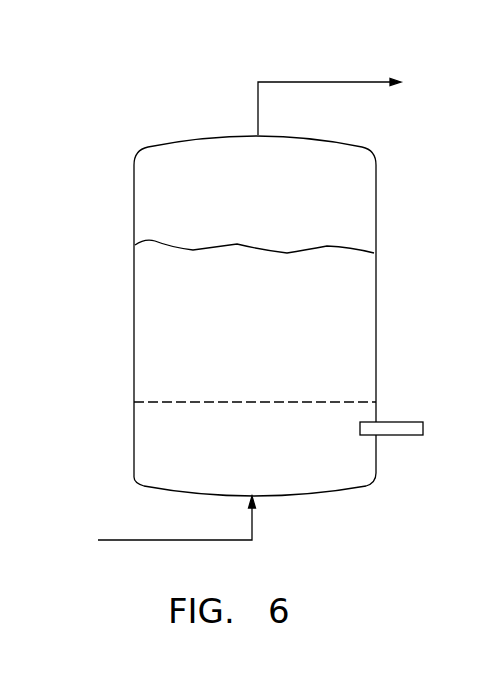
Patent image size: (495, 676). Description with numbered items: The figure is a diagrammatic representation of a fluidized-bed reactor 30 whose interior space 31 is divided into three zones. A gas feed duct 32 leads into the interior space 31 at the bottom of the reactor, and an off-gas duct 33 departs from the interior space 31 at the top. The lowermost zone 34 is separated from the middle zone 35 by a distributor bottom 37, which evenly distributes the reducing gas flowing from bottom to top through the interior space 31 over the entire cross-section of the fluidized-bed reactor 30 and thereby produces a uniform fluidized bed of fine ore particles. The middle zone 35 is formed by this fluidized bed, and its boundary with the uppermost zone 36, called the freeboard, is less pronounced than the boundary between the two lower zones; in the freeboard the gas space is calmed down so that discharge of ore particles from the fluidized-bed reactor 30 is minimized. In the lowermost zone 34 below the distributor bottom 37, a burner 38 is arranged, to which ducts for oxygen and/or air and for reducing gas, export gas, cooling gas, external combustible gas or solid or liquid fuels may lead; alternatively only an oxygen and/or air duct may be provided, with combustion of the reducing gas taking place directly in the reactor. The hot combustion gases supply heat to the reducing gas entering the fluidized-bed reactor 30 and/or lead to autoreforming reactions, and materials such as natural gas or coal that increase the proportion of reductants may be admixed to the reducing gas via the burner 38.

The fluidized-bed reactor 30 is at (133, 283).
The interior space 31 is at (272, 335).
The gas feed duct 32 is at (252, 525).
The off-gas duct 33 is at (277, 80).
The lowermost zone 34 is at (160, 443).
The middle zone 35 is at (148, 357).
The uppermost zone 36 is at (180, 163).
The distributor bottom 37 is at (312, 402).
The burner 38 is at (400, 432).